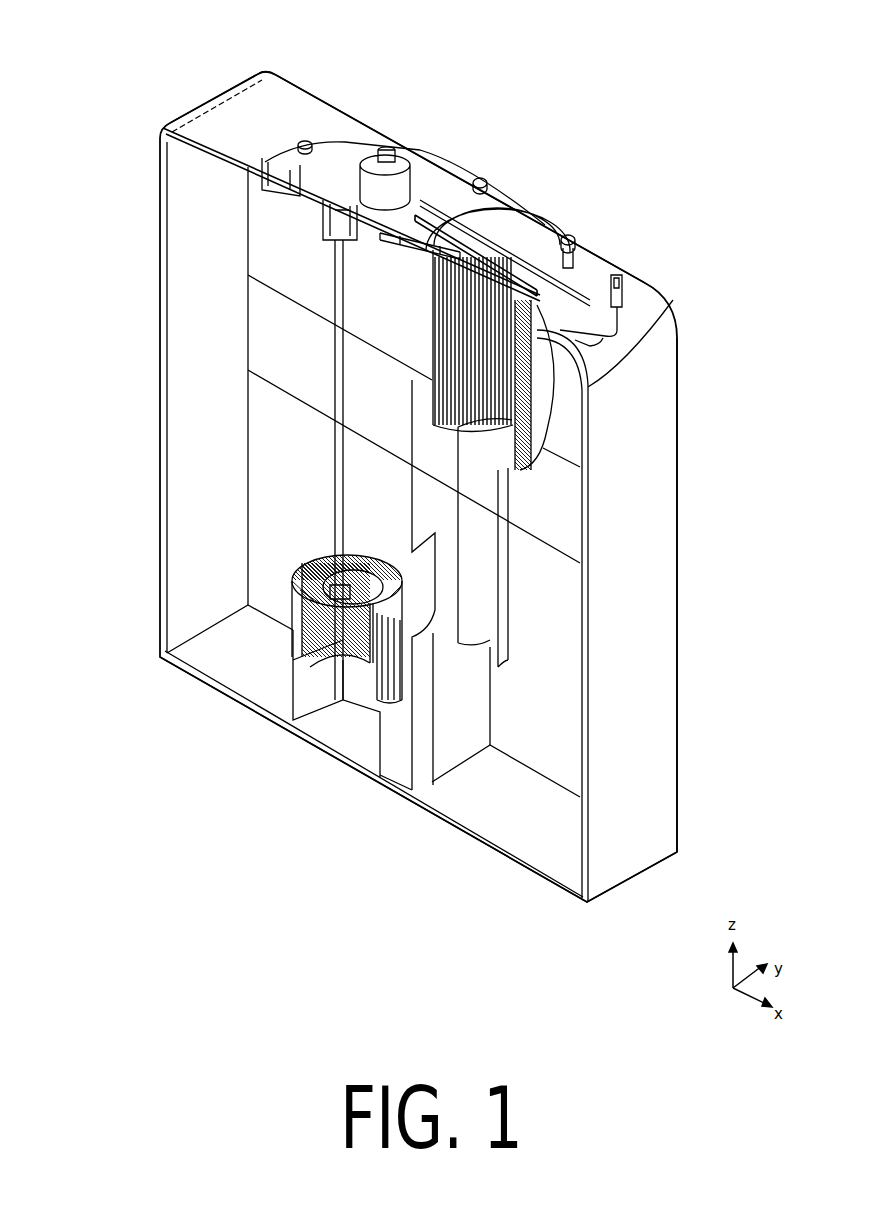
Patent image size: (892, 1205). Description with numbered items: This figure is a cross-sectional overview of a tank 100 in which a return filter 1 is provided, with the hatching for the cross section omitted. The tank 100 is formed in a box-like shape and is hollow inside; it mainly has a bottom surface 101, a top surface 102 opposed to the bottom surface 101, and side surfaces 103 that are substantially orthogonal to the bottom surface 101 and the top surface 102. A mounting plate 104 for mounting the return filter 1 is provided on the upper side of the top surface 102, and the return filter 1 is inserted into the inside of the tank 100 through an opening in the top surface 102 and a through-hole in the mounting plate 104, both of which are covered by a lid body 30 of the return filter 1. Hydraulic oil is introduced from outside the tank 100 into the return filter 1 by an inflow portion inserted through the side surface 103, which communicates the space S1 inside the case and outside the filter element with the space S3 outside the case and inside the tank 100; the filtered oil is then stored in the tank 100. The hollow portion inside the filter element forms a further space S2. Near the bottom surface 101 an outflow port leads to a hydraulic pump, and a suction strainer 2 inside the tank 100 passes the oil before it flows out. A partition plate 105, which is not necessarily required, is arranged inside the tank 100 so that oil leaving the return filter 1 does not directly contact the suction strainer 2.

The tank 100 is at (160, 128).
The bottom surface 101 is at (552, 852).
The top surface 102 is at (285, 90).
The side surfaces 103 is at (655, 577).
The mounting plate 104 is at (577, 325).
The partition plate 105 is at (450, 740).
The return filter 1 is at (538, 428).
The suction strainer 2 is at (298, 600).
The lid body 30 is at (512, 222).
The space S1 is at (435, 213).
The space S2 is at (480, 352).
The space S3 is at (272, 238).